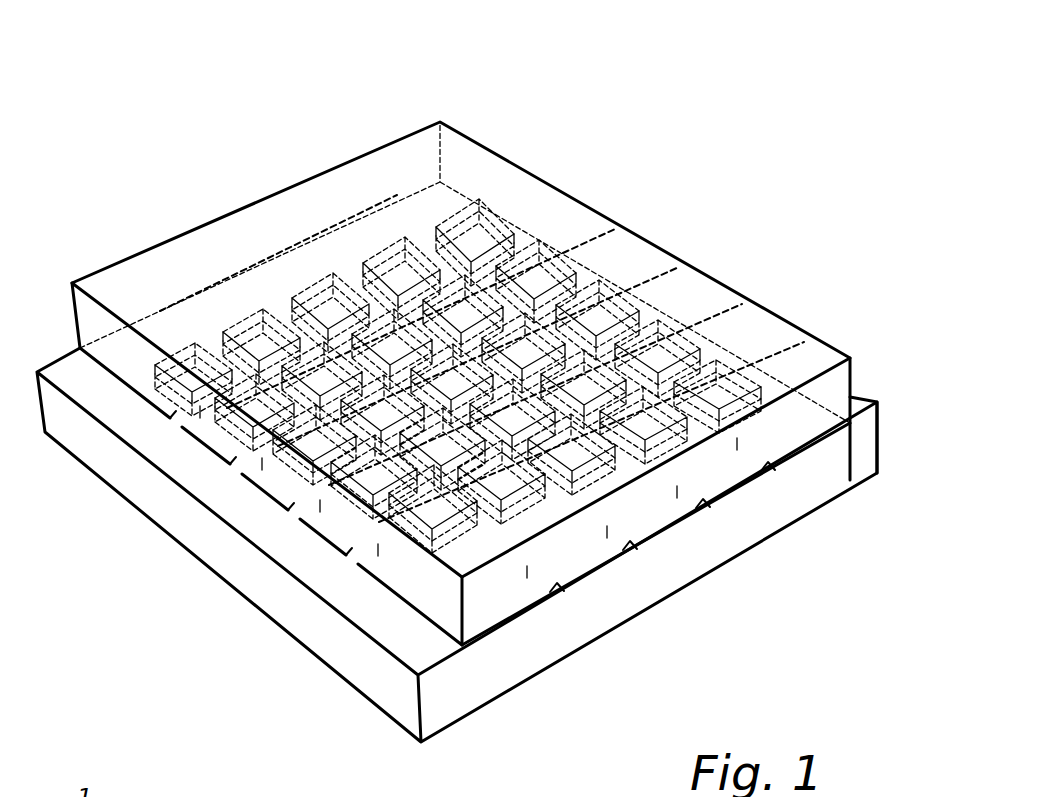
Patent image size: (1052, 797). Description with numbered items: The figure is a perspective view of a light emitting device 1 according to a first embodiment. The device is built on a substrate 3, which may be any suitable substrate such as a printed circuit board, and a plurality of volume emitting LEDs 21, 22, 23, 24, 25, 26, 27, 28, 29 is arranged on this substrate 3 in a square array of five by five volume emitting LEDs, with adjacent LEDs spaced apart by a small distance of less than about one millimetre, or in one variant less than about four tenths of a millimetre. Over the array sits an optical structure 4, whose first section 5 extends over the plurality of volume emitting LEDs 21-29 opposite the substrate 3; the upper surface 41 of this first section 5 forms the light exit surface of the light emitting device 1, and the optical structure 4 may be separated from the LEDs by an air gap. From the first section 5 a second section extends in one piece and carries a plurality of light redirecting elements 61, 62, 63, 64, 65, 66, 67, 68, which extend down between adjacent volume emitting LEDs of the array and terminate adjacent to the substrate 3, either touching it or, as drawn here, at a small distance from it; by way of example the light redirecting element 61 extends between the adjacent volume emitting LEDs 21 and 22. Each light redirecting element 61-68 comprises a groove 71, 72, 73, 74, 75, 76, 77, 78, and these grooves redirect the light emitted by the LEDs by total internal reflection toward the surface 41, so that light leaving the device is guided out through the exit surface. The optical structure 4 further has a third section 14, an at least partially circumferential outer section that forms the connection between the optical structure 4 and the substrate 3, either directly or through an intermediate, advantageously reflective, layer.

The light emitting device 1 is at (105, 47).
The substrate 3 is at (90, 433).
The optical structure 4 is at (110, 290).
The first section 5 is at (797, 420).
The third section 14 is at (865, 480).
The surface 41 is at (452, 155).
The volume emitting LED 21 is at (203, 370).
The volume emitting LED 22 is at (273, 307).
The volume emitting LED 23 is at (342, 307).
The volume emitting LED 24 is at (407, 273).
The volume emitting LED 25 is at (477, 235).
The volume emitting LED 26 is at (540, 275).
The volume emitting LED 27 is at (600, 310).
The volume emitting LED 28 is at (660, 345).
The volume emitting LED 29 is at (720, 385).
The light redirecting element 61 is at (527, 575).
The light redirecting element 62 is at (607, 533).
The light redirecting element 63 is at (677, 493).
The light redirecting element 64 is at (737, 445).
The light redirecting element 65 is at (200, 405).
The light redirecting element 66 is at (260, 460).
The light redirecting element 67 is at (320, 500).
The light redirecting element 68 is at (377, 545).
The groove 71 is at (557, 587).
The groove 72 is at (630, 547).
The groove 73 is at (703, 500).
The groove 74 is at (765, 457).
The groove 75 is at (173, 413).
The groove 76 is at (236, 458).
The groove 77 is at (292, 502).
The groove 78 is at (350, 548).